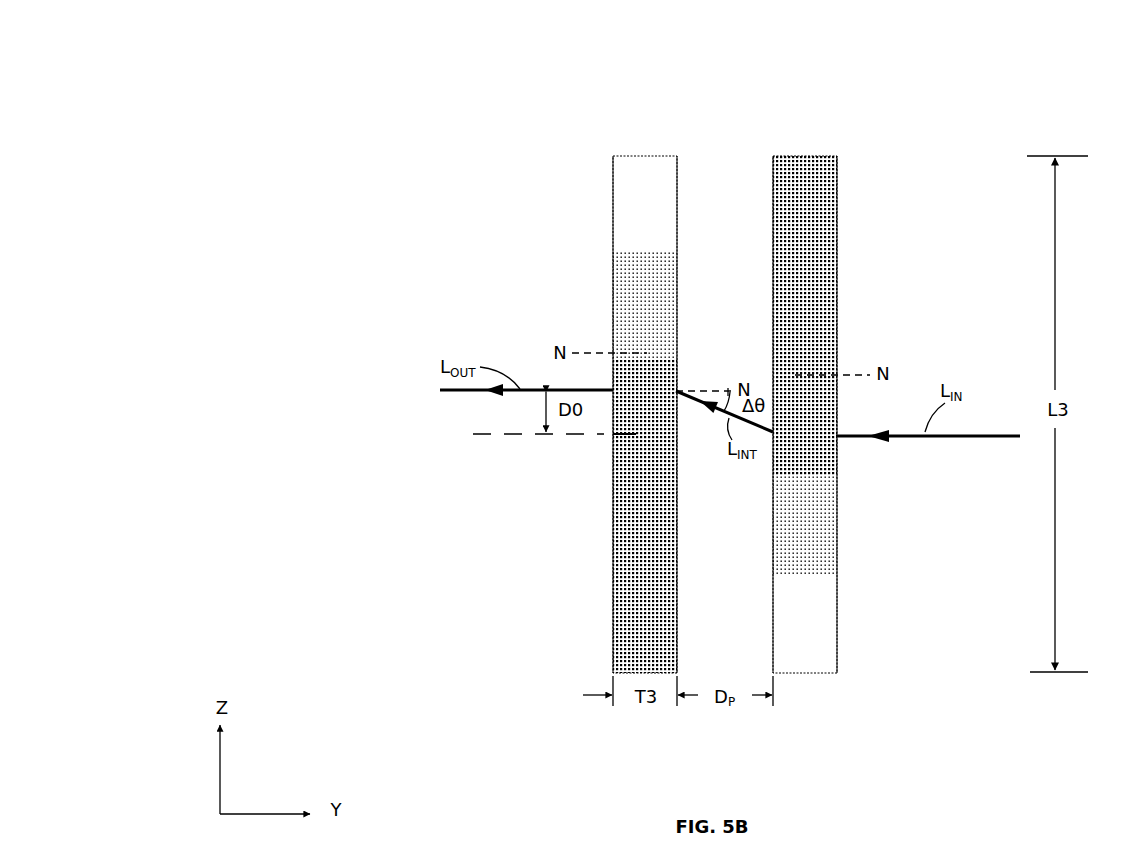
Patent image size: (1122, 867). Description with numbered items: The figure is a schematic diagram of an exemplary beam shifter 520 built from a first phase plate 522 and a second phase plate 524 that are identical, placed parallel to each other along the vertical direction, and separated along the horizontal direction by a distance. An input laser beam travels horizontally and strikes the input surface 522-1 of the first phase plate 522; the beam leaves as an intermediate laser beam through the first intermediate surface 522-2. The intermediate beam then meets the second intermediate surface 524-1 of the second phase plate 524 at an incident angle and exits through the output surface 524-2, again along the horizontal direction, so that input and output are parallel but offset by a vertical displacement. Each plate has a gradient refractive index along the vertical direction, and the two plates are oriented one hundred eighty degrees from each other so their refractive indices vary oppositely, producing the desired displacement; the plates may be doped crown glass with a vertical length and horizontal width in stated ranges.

The optical assembly 520 is at (714, 56).
The first phase plate 522 is at (803, 155).
The input surface 522-1 is at (841, 251).
The first intermediate surface 522-2 is at (770, 247).
The second phase plate 524 is at (650, 155).
The second intermediate surface 524-1 is at (680, 276).
The output surface 524-2 is at (610, 277).